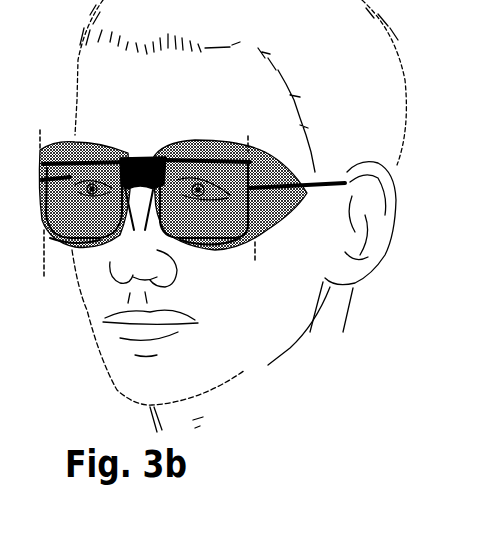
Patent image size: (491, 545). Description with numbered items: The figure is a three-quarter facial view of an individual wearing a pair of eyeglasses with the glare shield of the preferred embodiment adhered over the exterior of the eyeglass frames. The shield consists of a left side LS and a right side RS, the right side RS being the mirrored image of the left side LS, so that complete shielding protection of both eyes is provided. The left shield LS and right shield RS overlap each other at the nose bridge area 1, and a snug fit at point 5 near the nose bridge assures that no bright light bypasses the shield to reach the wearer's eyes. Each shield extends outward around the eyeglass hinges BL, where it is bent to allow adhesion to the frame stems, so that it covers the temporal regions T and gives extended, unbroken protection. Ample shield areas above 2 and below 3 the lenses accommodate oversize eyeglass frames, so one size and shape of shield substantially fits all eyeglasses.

The nose bridge area 1 is at (142, 157).
The area above 2 is at (82, 147).
The area below 3 is at (90, 240).
The point near the nose-bridge 5 is at (139, 223).
The temporal regions T is at (280, 205).
The eyeglass hinges BL is at (152, 204).
The right side RS is at (87, 186).
The left side LS is at (209, 189).